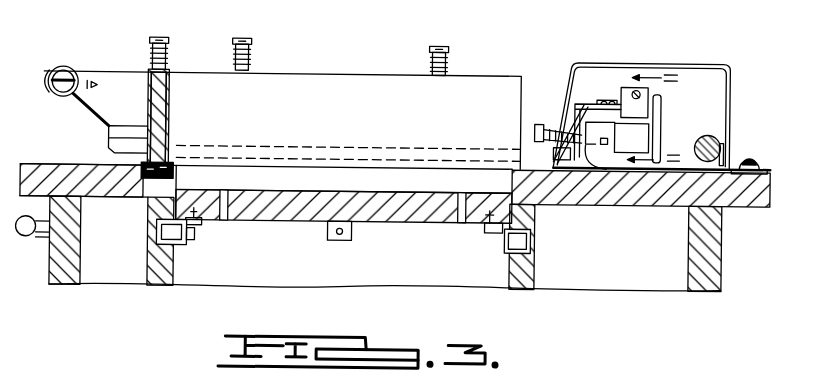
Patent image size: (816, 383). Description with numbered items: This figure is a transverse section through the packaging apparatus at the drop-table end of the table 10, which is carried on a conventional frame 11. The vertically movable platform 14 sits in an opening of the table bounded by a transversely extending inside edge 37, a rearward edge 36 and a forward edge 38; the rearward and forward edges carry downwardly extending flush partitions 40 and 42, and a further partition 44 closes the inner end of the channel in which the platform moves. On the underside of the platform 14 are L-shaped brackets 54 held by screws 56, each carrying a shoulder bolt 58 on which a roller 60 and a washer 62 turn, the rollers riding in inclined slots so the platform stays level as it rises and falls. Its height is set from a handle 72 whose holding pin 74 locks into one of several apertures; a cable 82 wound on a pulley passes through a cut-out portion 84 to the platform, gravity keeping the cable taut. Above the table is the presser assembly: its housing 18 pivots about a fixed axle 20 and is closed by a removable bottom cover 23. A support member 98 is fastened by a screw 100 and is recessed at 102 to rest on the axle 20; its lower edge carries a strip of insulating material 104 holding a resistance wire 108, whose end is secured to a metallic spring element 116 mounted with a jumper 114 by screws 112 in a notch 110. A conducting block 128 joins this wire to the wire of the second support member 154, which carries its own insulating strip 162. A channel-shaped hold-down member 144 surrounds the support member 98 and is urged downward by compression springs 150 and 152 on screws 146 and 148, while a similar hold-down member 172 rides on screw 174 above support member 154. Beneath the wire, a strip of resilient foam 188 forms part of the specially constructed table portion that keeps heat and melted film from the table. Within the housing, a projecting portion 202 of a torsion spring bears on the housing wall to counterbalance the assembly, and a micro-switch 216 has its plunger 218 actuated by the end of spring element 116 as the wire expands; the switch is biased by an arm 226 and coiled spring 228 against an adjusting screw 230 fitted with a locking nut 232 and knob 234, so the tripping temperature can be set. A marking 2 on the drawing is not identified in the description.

The table 10 is at (31, 161).
The frame 11 is at (713, 233).
The vertically movable platform 14 is at (342, 190).
The housing 18 is at (717, 62).
The fixed shaft or axle 20 is at (735, 130).
The removable bottom cover 23 is at (634, 166).
The rearward edge 36 is at (506, 181).
The inside edge 37 is at (372, 176).
The forward edge 38 is at (178, 185).
The partition 40 is at (524, 290).
The partition 42 is at (160, 285).
The partition 44 is at (377, 270).
The L-shaped bracket 54 is at (502, 248).
The screw 56 is at (485, 236).
The shoulder bolt 58 is at (533, 237).
The roller 60 is at (150, 254).
The washer 62 is at (182, 250).
The handle portion 72 is at (8, 232).
The holding pin 74 is at (43, 248).
The cable 82 is at (328, 237).
The cut-out portion 84 is at (336, 241).
The support member 98 is at (77, 103).
The screw 100 is at (45, 78).
The recess 102 is at (733, 107).
The strip of insulating material 104 is at (286, 138).
The resistance wire 108 is at (107, 149).
The notch 110 is at (658, 118).
The screws 112 is at (611, 102).
The heat conducting element or jumper 114 is at (590, 102).
The metallic spring element 116 is at (573, 110).
The conducting block 128 is at (128, 127).
The hold-down member 144 is at (335, 84).
The screw 146 is at (243, 41).
The screw 148 is at (438, 47).
The compression spring 150 is at (256, 63).
The compression spring 152 is at (448, 63).
The second support member 154 is at (170, 96).
The strip of insulating material 162 is at (186, 129).
The hold-down member 172 is at (147, 100).
The screw 174 is at (160, 41).
The strip of resilient material 188 is at (139, 177).
The projecting portion 202 is at (753, 158).
The micro-switch 216 is at (616, 137).
The plunger 218 is at (611, 157).
The arm 226 is at (536, 118).
The coiled spring 228 is at (567, 175).
The adjusting screw 230 is at (537, 146).
The locking nut 232 is at (536, 122).
The knob 234 is at (535, 130).
The direction arrow 2 is at (656, 174).